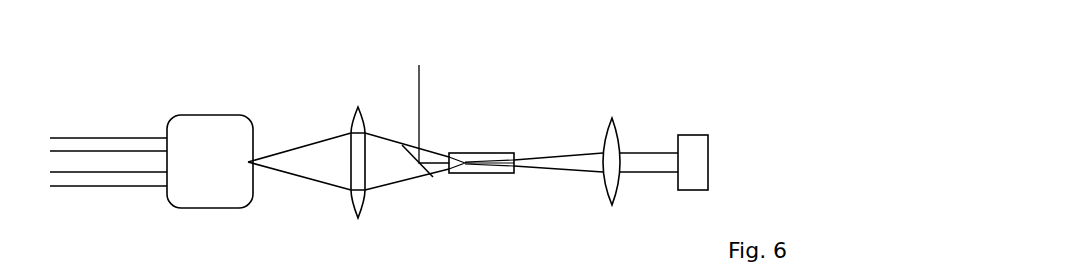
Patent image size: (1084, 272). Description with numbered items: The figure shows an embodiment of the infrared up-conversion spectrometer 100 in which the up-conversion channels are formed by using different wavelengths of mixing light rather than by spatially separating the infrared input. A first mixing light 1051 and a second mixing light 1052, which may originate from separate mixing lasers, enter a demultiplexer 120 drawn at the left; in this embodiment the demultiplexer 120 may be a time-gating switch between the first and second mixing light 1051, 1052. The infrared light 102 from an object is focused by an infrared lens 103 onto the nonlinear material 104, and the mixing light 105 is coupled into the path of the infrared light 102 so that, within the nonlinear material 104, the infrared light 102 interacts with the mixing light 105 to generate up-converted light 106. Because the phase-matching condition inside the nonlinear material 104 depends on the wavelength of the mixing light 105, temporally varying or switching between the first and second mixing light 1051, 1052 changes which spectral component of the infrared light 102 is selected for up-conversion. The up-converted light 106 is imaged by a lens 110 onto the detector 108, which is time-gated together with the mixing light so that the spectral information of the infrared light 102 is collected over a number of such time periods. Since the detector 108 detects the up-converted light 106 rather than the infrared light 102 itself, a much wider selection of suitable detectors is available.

The spectrometer 100 is at (682, 38).
The first mixing light 1051 is at (123, 186).
The second mixing light 1052 is at (115, 138).
The demultiplexer 120 is at (223, 210).
The infrared light 102 is at (312, 145).
The infrared lens 103 is at (360, 105).
The mixing light 105 is at (419, 90).
The nonlinear material 104 is at (482, 153).
The up-converted light 106 is at (562, 157).
The lens 110 is at (612, 118).
The detector 108 is at (692, 135).